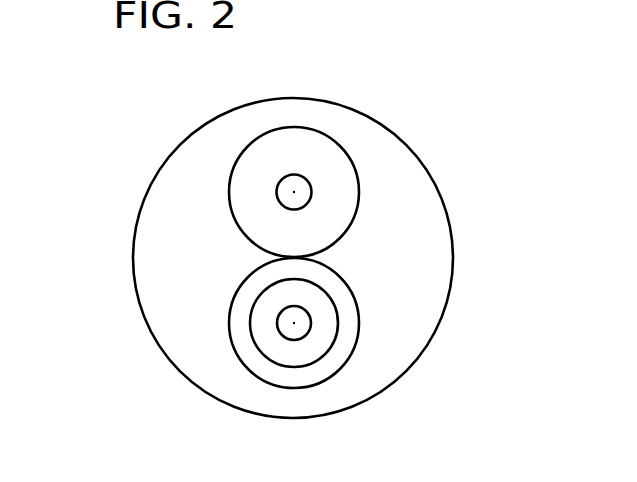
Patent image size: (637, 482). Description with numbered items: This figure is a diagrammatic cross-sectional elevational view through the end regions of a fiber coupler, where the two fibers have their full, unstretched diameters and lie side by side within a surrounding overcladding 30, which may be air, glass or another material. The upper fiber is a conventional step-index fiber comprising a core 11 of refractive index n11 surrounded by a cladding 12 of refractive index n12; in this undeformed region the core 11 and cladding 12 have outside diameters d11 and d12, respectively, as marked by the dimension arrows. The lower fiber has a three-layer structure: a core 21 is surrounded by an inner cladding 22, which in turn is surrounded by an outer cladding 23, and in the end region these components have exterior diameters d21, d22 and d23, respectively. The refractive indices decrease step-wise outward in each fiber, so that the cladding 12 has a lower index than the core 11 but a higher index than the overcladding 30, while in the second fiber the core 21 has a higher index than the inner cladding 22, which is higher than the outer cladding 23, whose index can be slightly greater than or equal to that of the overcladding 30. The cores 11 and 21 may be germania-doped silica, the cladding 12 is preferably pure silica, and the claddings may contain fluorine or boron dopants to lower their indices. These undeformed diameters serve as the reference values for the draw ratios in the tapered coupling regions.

The core 11 is at (305, 180).
The cladding 12 is at (295, 138).
The core 21 is at (297, 336).
The inner cladding 22 is at (317, 353).
The outer cladding 23 is at (353, 345).
The overcladding 30 is at (438, 285).
The core diameter d11 is at (240, 206).
The cladding diameter d12 is at (410, 240).
The core diameter d21 is at (353, 345).
The inner cladding diameter d22 is at (395, 323).
The outer cladding diameter d23 is at (410, 275).